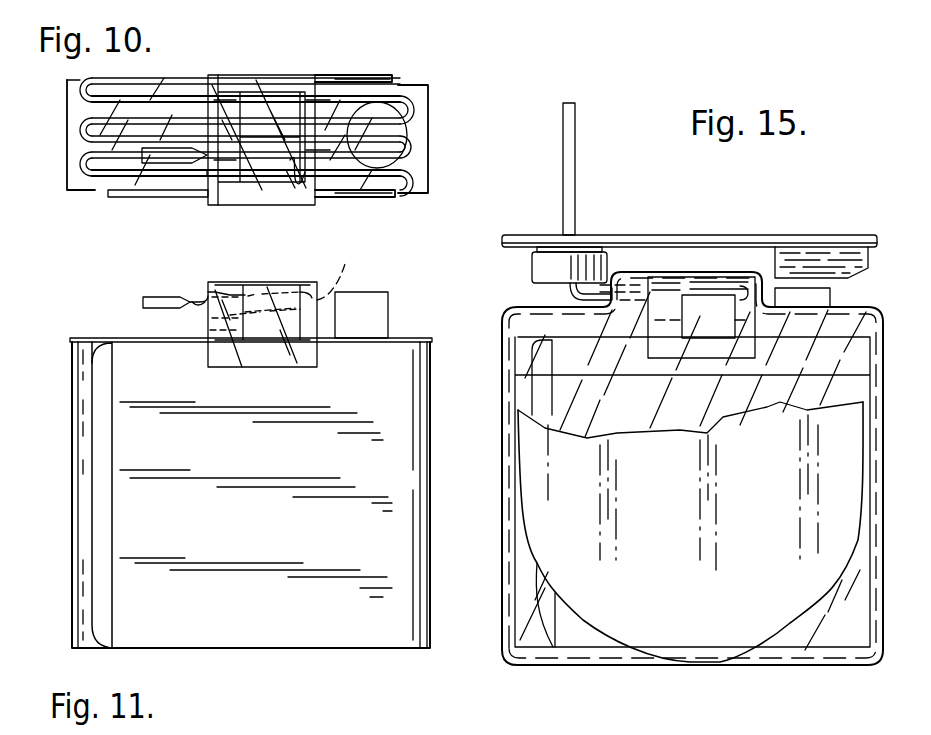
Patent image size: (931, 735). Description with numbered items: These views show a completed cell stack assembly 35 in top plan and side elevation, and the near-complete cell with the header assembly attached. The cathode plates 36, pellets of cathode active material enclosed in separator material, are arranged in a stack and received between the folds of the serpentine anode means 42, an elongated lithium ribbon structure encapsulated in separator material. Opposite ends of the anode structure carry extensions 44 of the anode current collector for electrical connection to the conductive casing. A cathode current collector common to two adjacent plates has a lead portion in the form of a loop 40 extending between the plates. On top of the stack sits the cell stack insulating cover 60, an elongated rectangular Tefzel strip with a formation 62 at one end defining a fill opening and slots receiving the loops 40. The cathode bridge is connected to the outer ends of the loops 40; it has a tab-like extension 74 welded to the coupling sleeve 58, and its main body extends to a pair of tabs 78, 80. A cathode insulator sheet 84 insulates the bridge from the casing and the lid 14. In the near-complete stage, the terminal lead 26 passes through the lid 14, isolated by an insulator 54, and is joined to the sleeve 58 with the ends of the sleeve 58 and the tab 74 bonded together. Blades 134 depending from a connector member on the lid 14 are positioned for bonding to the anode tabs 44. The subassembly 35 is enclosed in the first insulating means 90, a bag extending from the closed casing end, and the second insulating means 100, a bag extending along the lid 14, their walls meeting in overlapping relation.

In FIG. 15, the lid 14 is at (731, 235).
In FIG. 15, the terminal lead 26 is at (577, 171).
In FIG. 15, the cell stack assembly 35 is at (527, 385).
In FIG. 10, the cathode plates 36 is at (100, 190).
In FIG. 11, the cathode plates 36 is at (100, 592).
In FIG. 10, the loop 40 is at (70, 133).
In FIG. 11, the loop 40 is at (230, 316).
In FIG. 10, the anode means 42 is at (431, 118).
In FIG. 11, the anode means 42 is at (118, 545).
In FIG. 10, the extensions 44 is at (365, 82).
In FIG. 11, the extensions 44 is at (365, 292).
In FIG. 15, the extensions 44 is at (835, 297).
In FIG. 15, the insulator 54 is at (536, 265).
In FIG. 10, the coupling sleeve 58 is at (158, 158).
In FIG. 11, the coupling sleeve 58 is at (169, 297).
In FIG. 10, the cell stack insulating cover 60 is at (62, 154).
In FIG. 11, the cell stack insulating cover 60 is at (81, 338).
In FIG. 10, the formation 62 is at (378, 108).
In FIG. 10, the tab-like extension 74 is at (202, 165).
In FIG. 11, the tab-like extension 74 is at (200, 300).
In FIG. 10, the tab 78 is at (290, 168).
In FIG. 10, the tab 80 is at (262, 115).
In FIG. 15, the tab 80 is at (677, 317).
In FIG. 10, the cathode insulator sheet 84 is at (222, 190).
In FIG. 11, the cathode insulator sheet 84 is at (210, 340).
In FIG. 15, the first insulating means 90 is at (505, 455).
In FIG. 15, the second insulating means 100 is at (512, 310).
In FIG. 15, the blades 134 is at (862, 262).